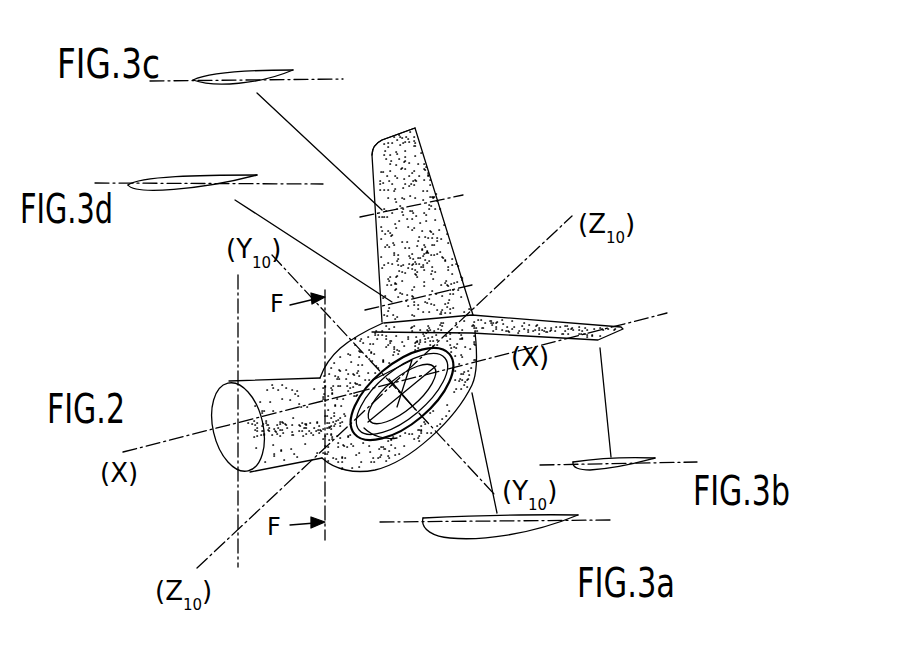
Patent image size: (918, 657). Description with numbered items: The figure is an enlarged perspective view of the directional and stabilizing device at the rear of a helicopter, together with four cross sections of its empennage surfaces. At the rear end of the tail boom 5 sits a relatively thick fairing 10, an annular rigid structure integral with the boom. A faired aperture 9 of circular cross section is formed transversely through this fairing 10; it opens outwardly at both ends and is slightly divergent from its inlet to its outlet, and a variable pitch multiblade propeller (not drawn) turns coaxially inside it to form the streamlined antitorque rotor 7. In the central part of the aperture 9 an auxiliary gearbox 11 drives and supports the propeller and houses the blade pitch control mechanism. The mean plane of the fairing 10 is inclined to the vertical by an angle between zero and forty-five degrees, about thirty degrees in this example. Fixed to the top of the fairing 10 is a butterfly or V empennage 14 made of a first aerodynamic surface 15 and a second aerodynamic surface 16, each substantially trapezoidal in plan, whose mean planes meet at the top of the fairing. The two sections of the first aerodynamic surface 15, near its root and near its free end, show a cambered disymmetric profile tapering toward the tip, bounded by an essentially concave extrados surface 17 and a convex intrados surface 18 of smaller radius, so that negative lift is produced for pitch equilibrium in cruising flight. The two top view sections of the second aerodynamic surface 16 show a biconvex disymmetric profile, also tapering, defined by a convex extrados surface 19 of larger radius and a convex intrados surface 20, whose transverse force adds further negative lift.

In FIG. 2, the tail boom 5 is at (223, 402).
In FIG. 2, the streamlined antitorque rotor 7 is at (372, 452).
In FIG. 2, the faired aperture 9 is at (447, 372).
In FIG. 2, the fairing 10 is at (353, 358).
In FIG. 2, the auxiliary gearbox 11 is at (397, 438).
In FIG. 2, the V empennage 14 is at (473, 230).
In FIG. 2, the first aerodynamic surface 15 is at (586, 322).
In FIG. 2, the second aerodynamic surface 16 is at (417, 183).
In FIG. 3a, the extrados surface 17 is at (562, 516).
In FIG. 3b, the extrados surface 17 is at (625, 458).
In FIG. 3a, the intrados surface 18 is at (508, 538).
In FIG. 3b, the intrados surface 18 is at (630, 470).
In FIG. 3c, the convex extrados surface 19 is at (272, 82).
In FIG. 3d, the convex extrados surface 19 is at (165, 190).
In FIG. 3c, the intrados surface 20 is at (272, 73).
In FIG. 3d, the intrados surface 20 is at (165, 175).